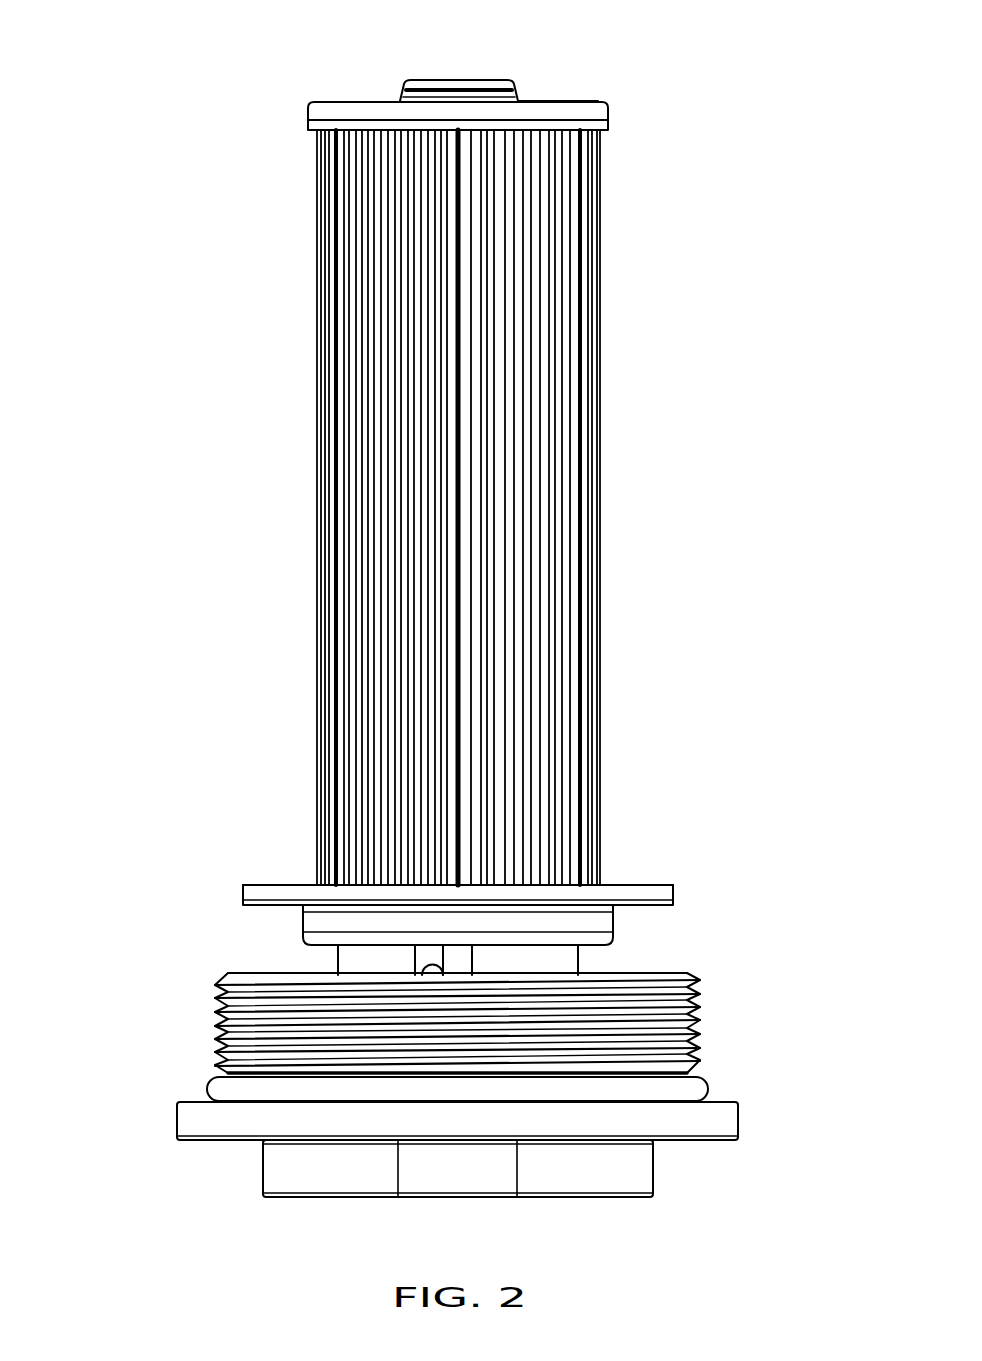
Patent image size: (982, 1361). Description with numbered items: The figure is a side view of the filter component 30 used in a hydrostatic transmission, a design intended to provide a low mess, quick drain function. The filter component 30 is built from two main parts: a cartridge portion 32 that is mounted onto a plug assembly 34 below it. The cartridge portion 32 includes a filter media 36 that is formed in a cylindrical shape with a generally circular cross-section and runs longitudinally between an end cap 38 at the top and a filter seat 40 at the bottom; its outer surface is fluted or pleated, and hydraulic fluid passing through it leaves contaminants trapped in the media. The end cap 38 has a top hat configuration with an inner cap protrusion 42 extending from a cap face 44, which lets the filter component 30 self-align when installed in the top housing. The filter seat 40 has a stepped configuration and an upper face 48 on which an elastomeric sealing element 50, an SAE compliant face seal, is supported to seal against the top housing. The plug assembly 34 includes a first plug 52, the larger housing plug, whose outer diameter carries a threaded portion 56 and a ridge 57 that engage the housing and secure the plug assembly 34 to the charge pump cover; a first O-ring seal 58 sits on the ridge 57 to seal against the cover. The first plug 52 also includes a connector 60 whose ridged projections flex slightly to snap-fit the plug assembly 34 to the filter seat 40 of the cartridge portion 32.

The filter component 30 is at (147, 165).
The cartridge portion 32 is at (287, 797).
The plug assembly 34 is at (180, 1045).
The filter media 36 is at (318, 462).
The end cap 38 is at (598, 102).
The filter seat 40 is at (612, 932).
The inner cap protrusion 42 is at (440, 86).
The cap face 44 is at (543, 100).
The upper face 48 is at (243, 902).
The sealing element 50 is at (262, 885).
The first plug 52 is at (700, 1017).
The threaded portion 56 is at (215, 1022).
The ridge 57 is at (723, 1102).
The first O-ring seal 58 is at (205, 1085).
The connector 60 is at (338, 963).